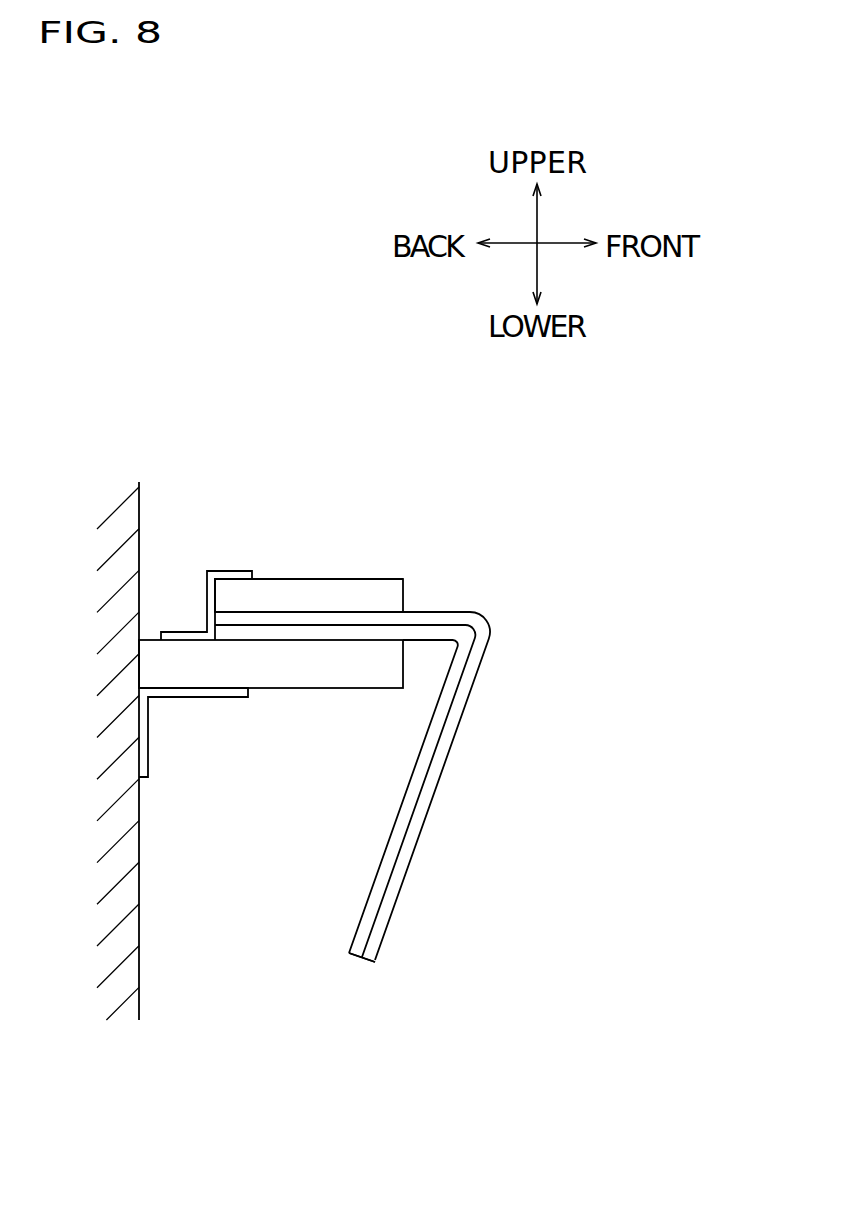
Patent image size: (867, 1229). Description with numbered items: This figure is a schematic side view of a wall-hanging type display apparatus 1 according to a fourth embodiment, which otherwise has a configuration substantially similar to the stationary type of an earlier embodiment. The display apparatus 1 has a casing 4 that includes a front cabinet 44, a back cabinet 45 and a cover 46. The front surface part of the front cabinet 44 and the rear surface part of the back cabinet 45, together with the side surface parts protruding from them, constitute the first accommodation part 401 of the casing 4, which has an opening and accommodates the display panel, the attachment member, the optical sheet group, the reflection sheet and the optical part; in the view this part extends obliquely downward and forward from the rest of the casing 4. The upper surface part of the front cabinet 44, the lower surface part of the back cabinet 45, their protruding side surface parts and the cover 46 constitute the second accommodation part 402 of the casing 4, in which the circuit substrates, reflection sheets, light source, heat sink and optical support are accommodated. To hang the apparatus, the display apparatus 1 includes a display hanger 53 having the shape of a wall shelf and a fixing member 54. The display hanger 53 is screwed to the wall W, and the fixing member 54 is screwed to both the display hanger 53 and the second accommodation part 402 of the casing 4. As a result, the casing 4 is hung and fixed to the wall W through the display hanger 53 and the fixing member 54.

The display apparatus 1 is at (463, 483).
The wall W is at (139, 541).
The casing 4 is at (590, 572).
The front cabinet 44 is at (465, 685).
The back cabinet 45 is at (437, 728).
The cover 46 is at (387, 593).
The display hanger 53 is at (308, 673).
The fixing member 54 is at (231, 571).
The first accommodation part 401 is at (351, 968).
The second accommodation part 402 is at (358, 566).